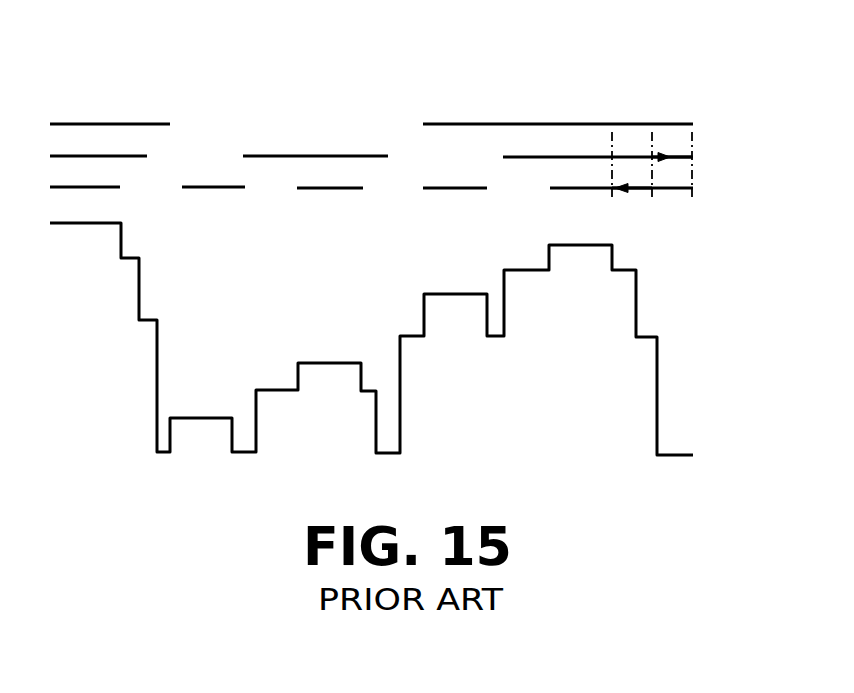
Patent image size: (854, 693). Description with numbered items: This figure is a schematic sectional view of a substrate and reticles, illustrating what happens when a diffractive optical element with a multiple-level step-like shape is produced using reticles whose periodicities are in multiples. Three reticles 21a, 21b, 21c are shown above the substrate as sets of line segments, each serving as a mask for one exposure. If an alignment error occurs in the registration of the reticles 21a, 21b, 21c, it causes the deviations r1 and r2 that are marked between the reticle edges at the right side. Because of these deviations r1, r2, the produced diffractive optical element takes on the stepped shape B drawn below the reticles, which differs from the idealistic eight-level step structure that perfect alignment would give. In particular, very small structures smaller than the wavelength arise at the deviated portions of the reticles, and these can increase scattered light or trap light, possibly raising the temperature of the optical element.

The reticle 21a is at (210, 187).
The reticle 21b is at (310, 156).
The reticle 21c is at (465, 124).
The deviation r1 is at (672, 157).
The deviation r2 is at (673, 188).
The shape B is at (272, 375).